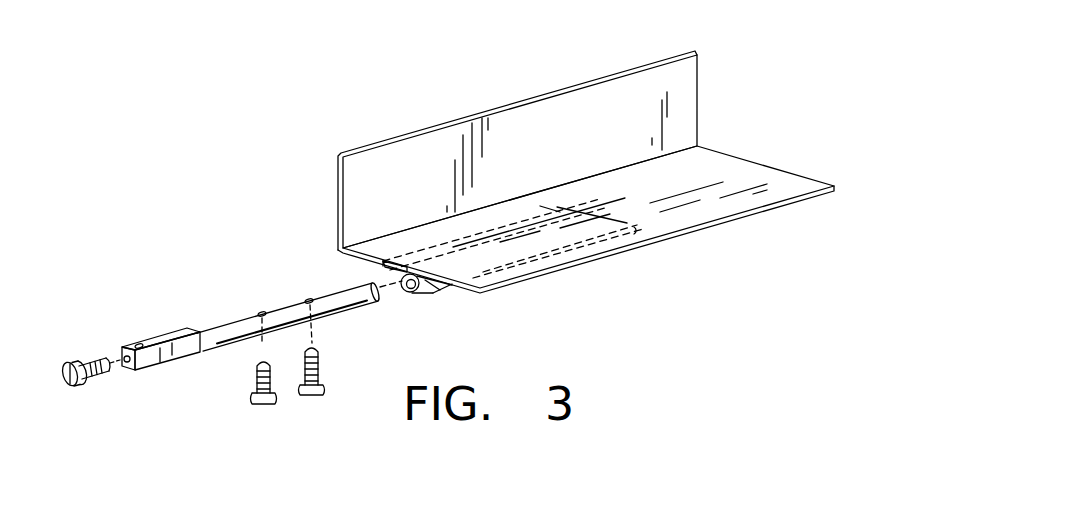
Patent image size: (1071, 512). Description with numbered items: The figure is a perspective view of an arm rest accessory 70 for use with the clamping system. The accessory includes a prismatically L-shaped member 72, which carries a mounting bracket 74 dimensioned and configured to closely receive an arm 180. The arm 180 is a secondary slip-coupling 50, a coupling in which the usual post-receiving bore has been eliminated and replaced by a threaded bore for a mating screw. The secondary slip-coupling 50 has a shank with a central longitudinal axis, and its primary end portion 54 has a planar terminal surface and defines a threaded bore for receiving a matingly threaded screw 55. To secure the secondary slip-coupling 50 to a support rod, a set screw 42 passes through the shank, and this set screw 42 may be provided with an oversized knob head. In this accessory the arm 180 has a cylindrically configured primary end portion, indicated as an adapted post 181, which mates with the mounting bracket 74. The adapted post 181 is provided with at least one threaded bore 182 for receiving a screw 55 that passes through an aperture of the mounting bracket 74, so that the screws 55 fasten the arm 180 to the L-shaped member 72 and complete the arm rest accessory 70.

The arm rest accessory 70 is at (586, 187).
The prismatically L-shaped member 72 is at (567, 157).
The mounting bracket 74 is at (431, 295).
The arm 180 is at (280, 316).
The adapted post 181 is at (285, 304).
The threaded bore 182 is at (308, 298).
The secondary slip-coupling 50 is at (148, 370).
The primary end portion 54 is at (218, 350).
The set screw 42 is at (90, 362).
The screw 55 is at (318, 370).